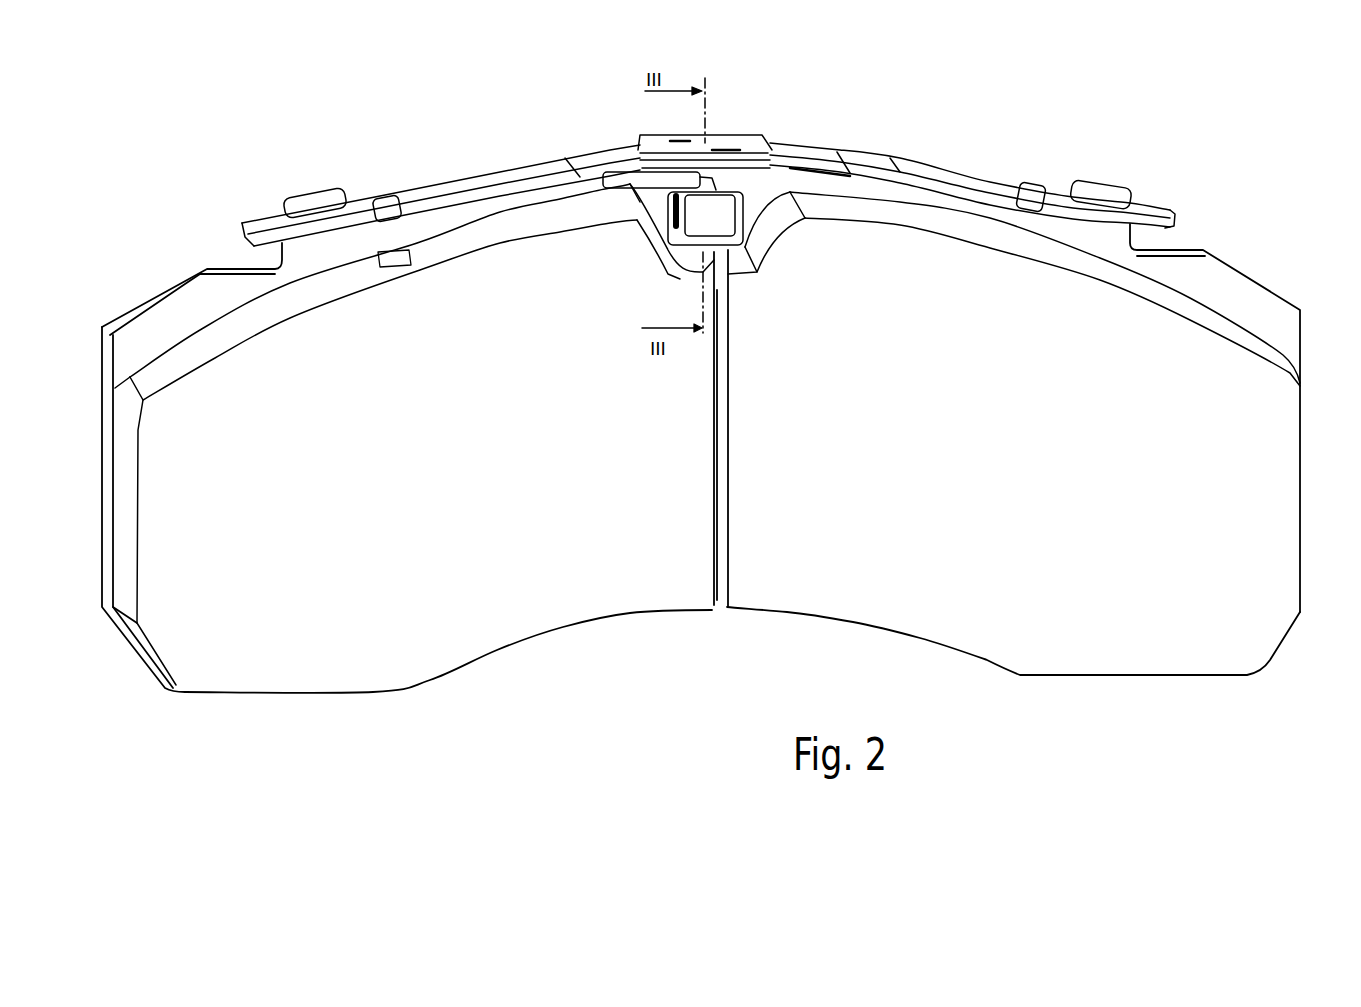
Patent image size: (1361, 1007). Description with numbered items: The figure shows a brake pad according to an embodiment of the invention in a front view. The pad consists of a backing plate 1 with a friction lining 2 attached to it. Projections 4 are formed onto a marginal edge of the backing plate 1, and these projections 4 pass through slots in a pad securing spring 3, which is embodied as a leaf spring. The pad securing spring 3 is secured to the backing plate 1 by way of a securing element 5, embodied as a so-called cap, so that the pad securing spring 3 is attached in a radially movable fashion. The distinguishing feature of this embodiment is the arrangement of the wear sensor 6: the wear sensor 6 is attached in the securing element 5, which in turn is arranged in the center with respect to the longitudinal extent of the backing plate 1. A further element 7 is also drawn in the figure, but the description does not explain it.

The backing plate 1 is at (165, 313).
The friction lining 2 is at (352, 663).
The pad securing spring 3 is at (890, 168).
The projections 4 is at (330, 198).
The securing element 5 is at (727, 142).
The wear sensor 6 is at (742, 242).
The plate 7 is at (672, 210).